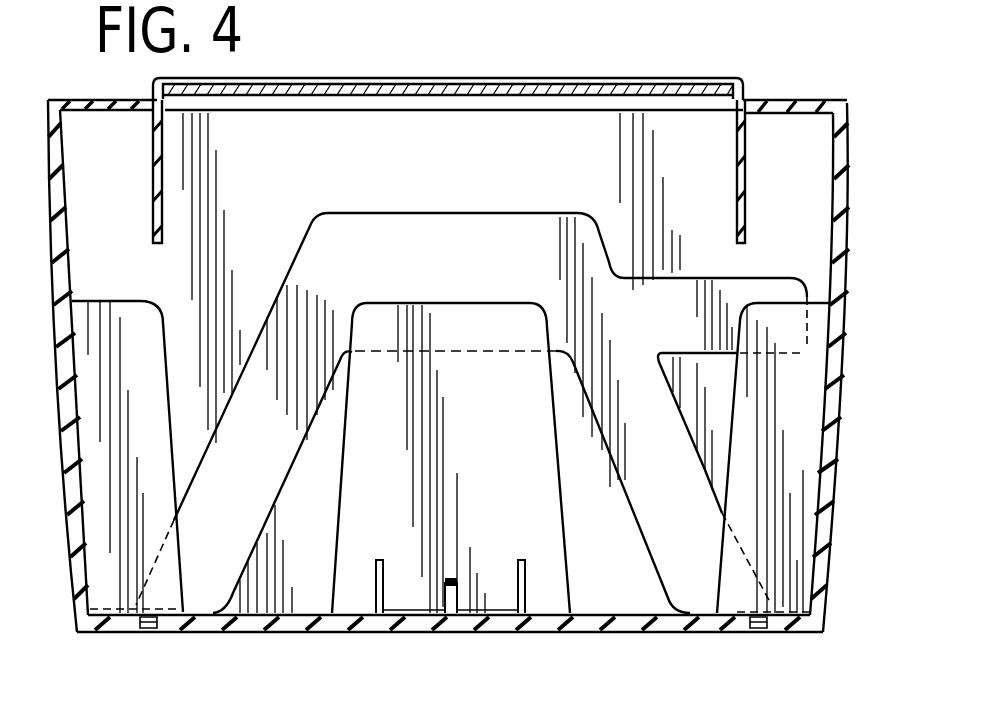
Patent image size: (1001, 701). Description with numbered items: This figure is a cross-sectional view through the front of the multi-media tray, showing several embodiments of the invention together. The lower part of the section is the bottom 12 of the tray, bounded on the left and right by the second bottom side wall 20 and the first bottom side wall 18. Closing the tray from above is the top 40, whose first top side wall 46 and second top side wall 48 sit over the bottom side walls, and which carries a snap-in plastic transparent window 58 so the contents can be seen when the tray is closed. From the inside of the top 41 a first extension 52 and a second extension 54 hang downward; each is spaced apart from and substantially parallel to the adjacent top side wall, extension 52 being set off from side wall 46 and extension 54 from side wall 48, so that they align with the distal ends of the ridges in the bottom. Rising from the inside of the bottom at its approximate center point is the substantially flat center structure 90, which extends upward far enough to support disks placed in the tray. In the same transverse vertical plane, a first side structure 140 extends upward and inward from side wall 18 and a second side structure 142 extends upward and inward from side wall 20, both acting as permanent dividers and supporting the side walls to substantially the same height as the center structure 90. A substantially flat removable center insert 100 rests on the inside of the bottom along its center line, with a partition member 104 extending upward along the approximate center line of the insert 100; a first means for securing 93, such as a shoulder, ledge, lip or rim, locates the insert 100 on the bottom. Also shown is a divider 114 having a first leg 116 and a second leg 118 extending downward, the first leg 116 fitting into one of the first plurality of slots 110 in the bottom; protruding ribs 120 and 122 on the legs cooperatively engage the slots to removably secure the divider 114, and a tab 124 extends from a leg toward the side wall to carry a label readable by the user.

The bottom 12 is at (450, 381).
The first bottom side wall 18 is at (832, 558).
The second bottom side wall 20 is at (72, 558).
The top 40 is at (453, 128).
The inside of the top 41 is at (380, 122).
The first top side wall 46 is at (847, 143).
The second top side wall 48 is at (50, 153).
The first extension 52 is at (745, 172).
The second extension 54 is at (153, 189).
The snap-in plastic transparent window 58 is at (618, 84).
The center structure 90 is at (537, 489).
The first means for securing 93 is at (373, 582).
The removable center insert 100 is at (427, 633).
The partition member 104 is at (450, 580).
The first plurality of slots 110 is at (753, 634).
The divider 114 is at (483, 240).
The first leg 116 is at (667, 518).
The second leg 118 is at (263, 485).
The protruding rib 120 is at (773, 632).
The protruding rib 122 is at (138, 630).
The tab 124 is at (745, 297).
The first side structure 140 is at (800, 392).
The second side structure 142 is at (88, 392).